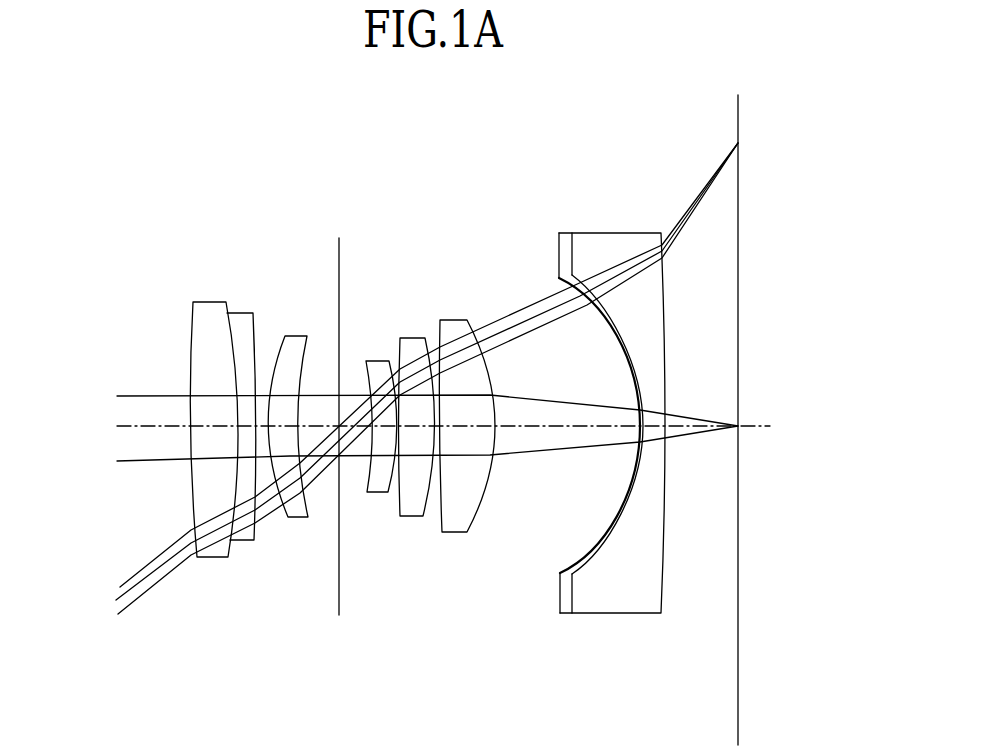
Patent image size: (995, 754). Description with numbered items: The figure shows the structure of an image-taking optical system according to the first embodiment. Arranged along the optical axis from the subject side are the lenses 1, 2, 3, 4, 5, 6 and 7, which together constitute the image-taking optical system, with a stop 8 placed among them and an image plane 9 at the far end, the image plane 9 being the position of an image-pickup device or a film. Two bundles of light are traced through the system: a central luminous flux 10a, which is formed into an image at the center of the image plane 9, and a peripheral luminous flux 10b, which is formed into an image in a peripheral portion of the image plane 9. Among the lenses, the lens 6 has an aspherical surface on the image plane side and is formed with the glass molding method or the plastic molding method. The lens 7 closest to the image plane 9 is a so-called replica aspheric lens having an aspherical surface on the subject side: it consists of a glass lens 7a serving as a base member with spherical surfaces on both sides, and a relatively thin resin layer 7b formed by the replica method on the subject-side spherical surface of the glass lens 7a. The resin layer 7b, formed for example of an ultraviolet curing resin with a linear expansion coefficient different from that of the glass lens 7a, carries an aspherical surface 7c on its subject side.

The lens 1 is at (208, 305).
The lens 2 is at (238, 318).
The lens 3 is at (294, 340).
The lens 4 is at (371, 365).
The lens 5 is at (411, 343).
The lens 6 is at (455, 323).
The lens 7 is at (583, 450).
The glass lens 7a is at (612, 608).
The resin layer 7b is at (566, 613).
The aspherical surface 7c is at (592, 535).
The stop 8 is at (339, 258).
The image plane 9 is at (739, 120).
The luminous flux 10a is at (102, 385).
The luminous flux 10b is at (108, 577).